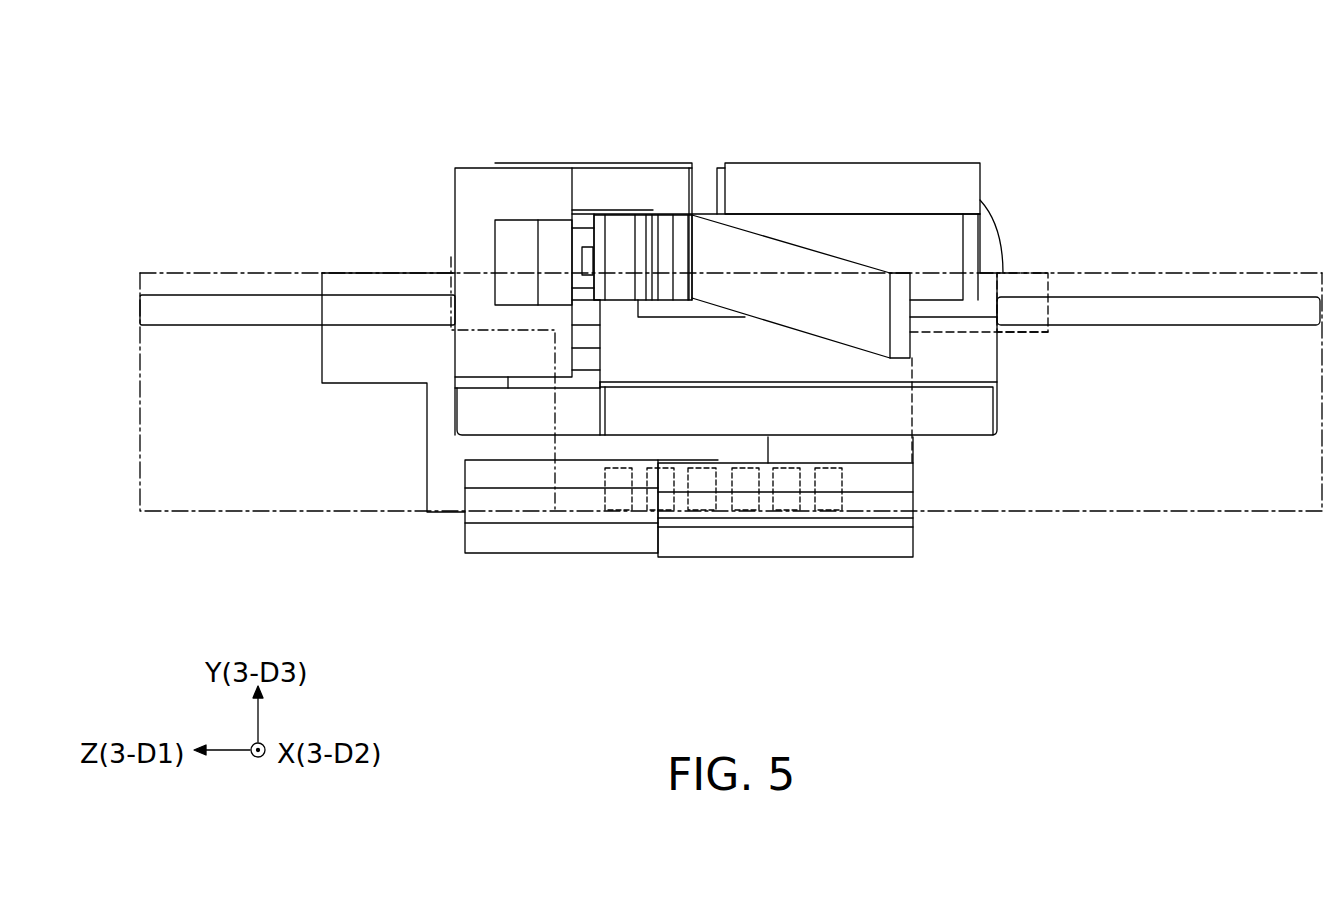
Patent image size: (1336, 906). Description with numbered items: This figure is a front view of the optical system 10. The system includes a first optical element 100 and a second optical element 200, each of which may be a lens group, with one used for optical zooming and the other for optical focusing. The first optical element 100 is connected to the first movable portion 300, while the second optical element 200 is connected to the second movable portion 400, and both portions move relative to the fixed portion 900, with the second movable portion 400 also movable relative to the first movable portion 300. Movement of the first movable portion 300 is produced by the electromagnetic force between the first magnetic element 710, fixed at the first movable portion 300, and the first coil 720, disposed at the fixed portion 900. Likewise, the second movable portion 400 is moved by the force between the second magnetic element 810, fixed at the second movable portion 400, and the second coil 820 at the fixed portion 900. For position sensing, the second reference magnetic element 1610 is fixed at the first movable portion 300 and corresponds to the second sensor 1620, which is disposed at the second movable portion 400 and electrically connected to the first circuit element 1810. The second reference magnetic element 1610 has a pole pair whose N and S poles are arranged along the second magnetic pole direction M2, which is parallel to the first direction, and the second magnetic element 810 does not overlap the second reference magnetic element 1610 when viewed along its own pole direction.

The optical system 10 is at (160, 61).
The first optical element 100 is at (653, 163).
The second optical element 200 is at (903, 180).
The first movable portion 300 is at (470, 188).
The second movable portion 400 is at (983, 362).
The first magnetic element 710 is at (480, 410).
The first coil 720 is at (565, 545).
The second magnetic element 810 is at (975, 410).
The second coil 820 is at (785, 545).
The fixed portion 900 is at (140, 393).
The second reference magnetic element 1610 is at (520, 233).
The second sensor 1620 is at (583, 247).
The first circuit element 1810 is at (760, 245).
The second magnetic pole direction M2 is at (603, 257).